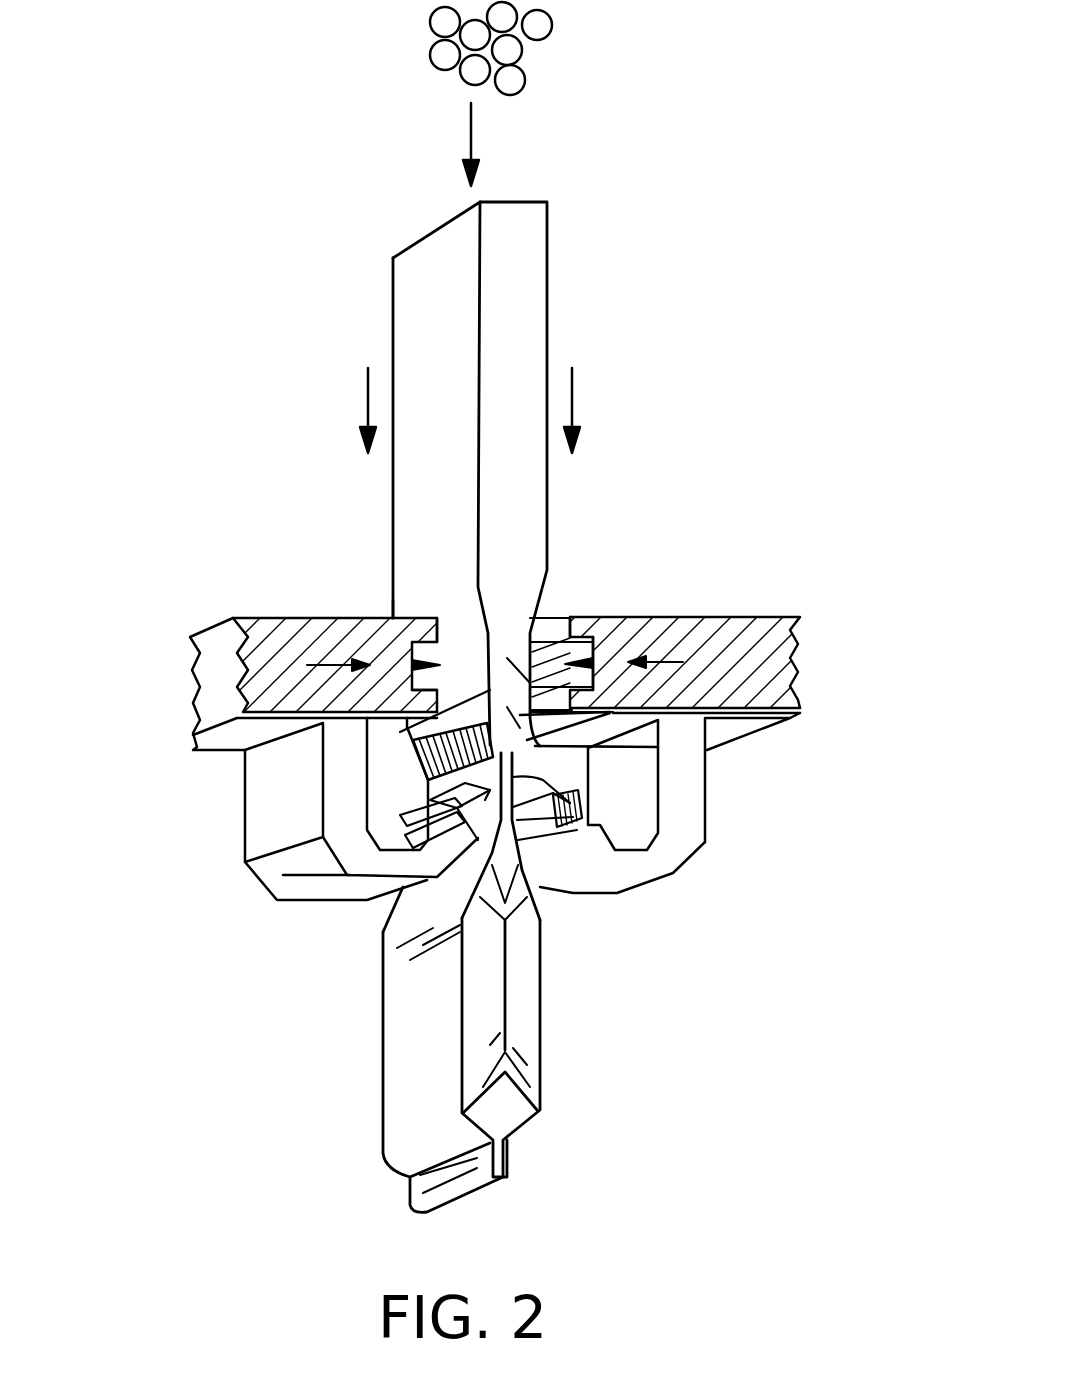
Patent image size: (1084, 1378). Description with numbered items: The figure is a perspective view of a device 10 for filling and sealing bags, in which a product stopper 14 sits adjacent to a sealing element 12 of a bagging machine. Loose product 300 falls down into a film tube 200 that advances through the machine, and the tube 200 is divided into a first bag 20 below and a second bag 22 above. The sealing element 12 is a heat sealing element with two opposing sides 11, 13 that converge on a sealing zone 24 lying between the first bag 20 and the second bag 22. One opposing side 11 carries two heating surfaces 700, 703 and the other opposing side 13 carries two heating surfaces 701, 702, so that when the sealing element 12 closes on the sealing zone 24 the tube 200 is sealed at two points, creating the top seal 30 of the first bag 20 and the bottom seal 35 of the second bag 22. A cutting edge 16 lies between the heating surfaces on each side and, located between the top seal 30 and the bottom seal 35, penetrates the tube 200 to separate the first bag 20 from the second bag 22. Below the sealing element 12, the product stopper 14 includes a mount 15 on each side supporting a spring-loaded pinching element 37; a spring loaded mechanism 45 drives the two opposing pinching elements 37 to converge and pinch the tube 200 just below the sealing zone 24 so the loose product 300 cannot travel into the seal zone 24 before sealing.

The loose product 300 is at (557, 55).
The tube 200 is at (512, 265).
The sealing element 12 is at (270, 638).
The second bag 22 is at (408, 568).
The opposing side 11 is at (423, 702).
The heating surface 700 is at (437, 618).
The heating surface 703 is at (405, 745).
The heating surface 701 is at (567, 620).
The opposing side 13 is at (545, 630).
The cutting edge 16 is at (603, 615).
The heating surface 702 is at (565, 715).
The mount 15 is at (347, 743).
The sealing zone 24 is at (503, 685).
The product stopper 14 is at (290, 873).
The pinching element 37 is at (460, 795).
The spring loaded mechanism 45 is at (548, 835).
The bottom seal 35 is at (507, 660).
The top seal 30 is at (507, 707).
The device 10 is at (895, 864).
The first bag 20 is at (378, 1048).